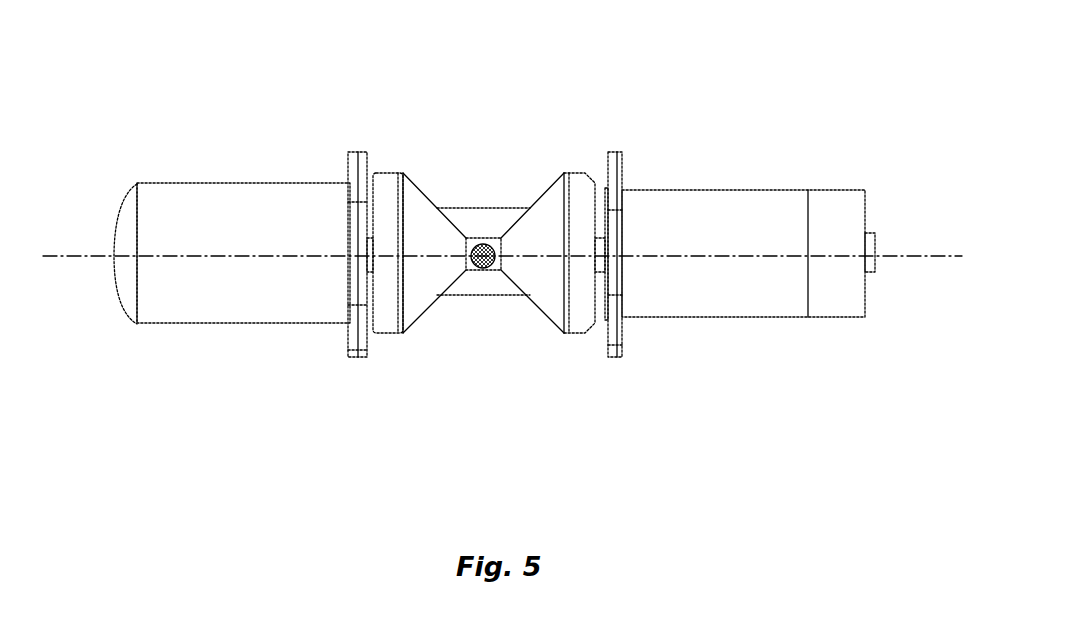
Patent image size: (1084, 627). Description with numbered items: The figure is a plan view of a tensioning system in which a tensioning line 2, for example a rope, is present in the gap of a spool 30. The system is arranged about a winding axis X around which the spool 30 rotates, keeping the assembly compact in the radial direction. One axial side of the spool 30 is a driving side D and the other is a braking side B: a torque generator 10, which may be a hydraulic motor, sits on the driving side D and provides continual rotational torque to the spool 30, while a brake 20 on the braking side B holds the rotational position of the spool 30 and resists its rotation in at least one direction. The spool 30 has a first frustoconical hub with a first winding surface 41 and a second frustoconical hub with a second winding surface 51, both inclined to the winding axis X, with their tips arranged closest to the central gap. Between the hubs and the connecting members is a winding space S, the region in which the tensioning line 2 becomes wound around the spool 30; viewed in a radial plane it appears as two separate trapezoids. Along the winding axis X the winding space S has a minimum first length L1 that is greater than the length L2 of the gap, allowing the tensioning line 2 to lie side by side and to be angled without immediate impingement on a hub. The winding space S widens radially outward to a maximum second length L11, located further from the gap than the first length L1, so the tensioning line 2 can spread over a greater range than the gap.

The tensioning line 2 is at (495, 270).
The torque generator 10 is at (657, 188).
The brake 20 is at (193, 181).
The spool 30 is at (486, 265).
The first winding surface 41 is at (550, 250).
The second winding surface 51 is at (440, 250).
The braking side B is at (367, 413).
The driving side D is at (883, 413).
The winding axis X is at (903, 250).
The winding space S is at (493, 198).
The first length L1 is at (526, 208).
The second length L11 is at (564, 173).
The length of the gap L2 is at (483, 327).